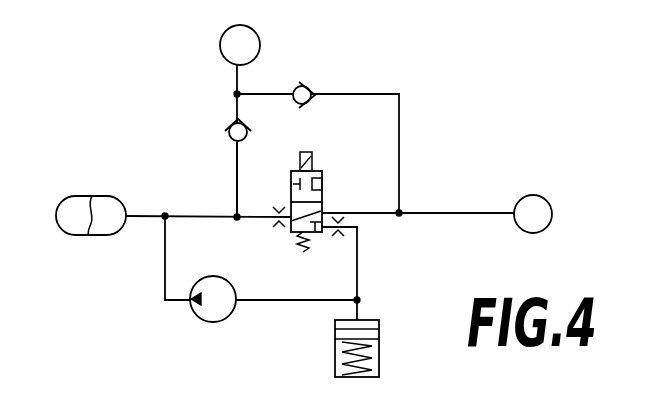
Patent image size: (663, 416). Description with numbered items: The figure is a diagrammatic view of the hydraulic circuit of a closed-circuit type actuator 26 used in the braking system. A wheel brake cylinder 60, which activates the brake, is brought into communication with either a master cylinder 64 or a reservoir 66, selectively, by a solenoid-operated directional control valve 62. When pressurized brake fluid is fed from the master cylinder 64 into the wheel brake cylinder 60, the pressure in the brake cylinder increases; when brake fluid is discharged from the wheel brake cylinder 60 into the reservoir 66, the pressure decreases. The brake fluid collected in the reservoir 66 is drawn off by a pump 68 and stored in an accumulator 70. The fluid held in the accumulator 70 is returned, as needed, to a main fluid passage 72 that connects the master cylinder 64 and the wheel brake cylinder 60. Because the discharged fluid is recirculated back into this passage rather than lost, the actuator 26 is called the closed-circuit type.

The actuator 26 is at (443, 80).
The wheel brake cylinder 60 is at (533, 203).
The solenoid-operated directional control valve 62 is at (322, 184).
The master cylinder 64 is at (247, 40).
The reservoir 66 is at (379, 351).
The pump 68 is at (212, 321).
The accumulator 70 is at (103, 205).
The main fluid passage 72 is at (237, 181).